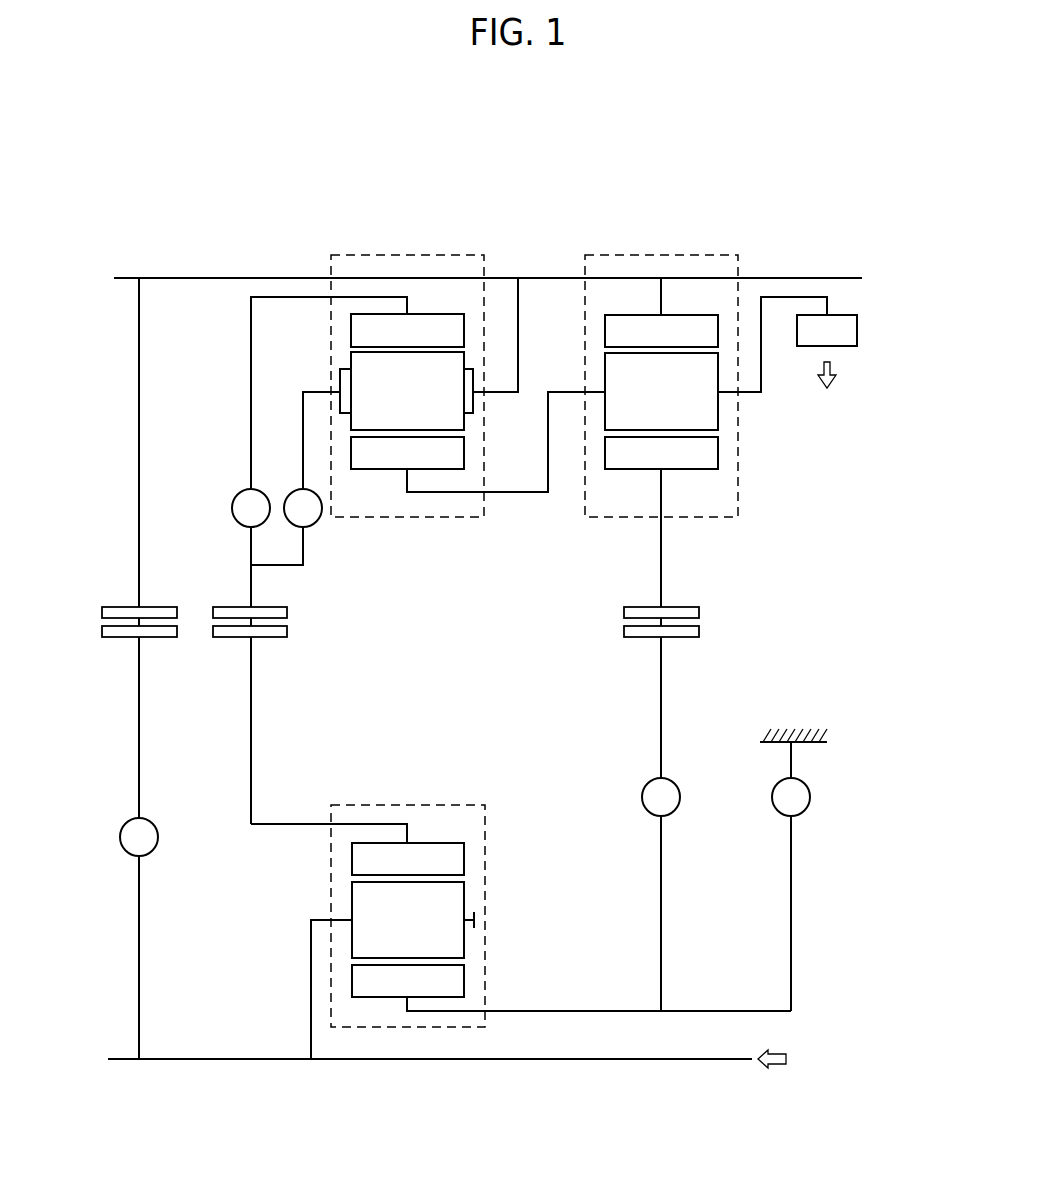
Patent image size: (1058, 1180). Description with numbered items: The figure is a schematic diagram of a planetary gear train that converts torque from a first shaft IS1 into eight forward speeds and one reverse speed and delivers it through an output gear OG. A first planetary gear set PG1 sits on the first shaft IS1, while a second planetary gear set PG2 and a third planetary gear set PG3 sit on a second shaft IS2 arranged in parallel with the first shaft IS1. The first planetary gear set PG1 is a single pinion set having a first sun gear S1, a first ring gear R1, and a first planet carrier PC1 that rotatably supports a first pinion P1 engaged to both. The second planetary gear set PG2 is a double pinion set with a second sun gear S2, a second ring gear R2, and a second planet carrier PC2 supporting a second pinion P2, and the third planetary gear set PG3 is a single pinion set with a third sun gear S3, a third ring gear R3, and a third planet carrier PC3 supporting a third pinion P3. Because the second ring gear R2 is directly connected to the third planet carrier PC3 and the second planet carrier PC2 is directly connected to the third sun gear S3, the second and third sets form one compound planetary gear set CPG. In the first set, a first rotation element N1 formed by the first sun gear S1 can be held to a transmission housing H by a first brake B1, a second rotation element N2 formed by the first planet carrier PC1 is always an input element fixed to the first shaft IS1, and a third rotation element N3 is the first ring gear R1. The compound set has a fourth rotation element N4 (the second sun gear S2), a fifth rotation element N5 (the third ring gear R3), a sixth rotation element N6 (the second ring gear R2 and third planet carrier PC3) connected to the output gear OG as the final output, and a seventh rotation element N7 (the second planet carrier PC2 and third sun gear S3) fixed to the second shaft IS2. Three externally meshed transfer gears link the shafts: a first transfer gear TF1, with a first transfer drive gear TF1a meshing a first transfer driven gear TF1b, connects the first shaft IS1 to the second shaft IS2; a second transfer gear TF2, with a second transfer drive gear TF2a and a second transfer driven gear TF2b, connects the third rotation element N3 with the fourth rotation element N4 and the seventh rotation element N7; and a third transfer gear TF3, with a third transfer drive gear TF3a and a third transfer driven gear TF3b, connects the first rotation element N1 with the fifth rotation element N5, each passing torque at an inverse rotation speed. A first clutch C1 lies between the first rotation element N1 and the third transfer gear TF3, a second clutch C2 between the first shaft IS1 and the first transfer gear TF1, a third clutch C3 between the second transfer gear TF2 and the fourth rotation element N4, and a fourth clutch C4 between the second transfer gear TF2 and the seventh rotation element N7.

The compound planetary gear set CPG is at (458, 141).
The first planetary gear set PG1 is at (388, 1040).
The second planetary gear set PG2 is at (442, 246).
The third planetary gear set PG3 is at (610, 246).
The first shaft IS1 is at (657, 1063).
The second shaft IS2 is at (190, 275).
The first rotation element N1 is at (571, 988).
The second rotation element N2 is at (270, 970).
The third rotation element N3 is at (357, 849).
The fourth rotation element N4 is at (407, 330).
The fifth rotation element N5 is at (661, 453).
The sixth rotation element N6 is at (549, 476).
The seventh rotation element N7 is at (519, 312).
The first sun gear S1 is at (571, 988).
The second sun gear S2 is at (407, 330).
The third sun gear S3 is at (661, 312).
The first ring gear R1 is at (357, 849).
The second ring gear R2 is at (407, 453).
The third ring gear R3 is at (661, 453).
The first planet carrier PC1 is at (325, 917).
The second planet carrier PC2 is at (320, 389).
The third planet carrier PC3 is at (745, 394).
The first pinion P1 is at (413, 920).
The second pinion P2 is at (406, 391).
The third pinion P3 is at (661, 391).
The output gear OG is at (787, 358).
The first clutch C1 is at (661, 740).
The second clutch C2 is at (139, 668).
The third clutch C3 is at (319, 560).
The fourth clutch C4 is at (295, 478).
The first brake B1 is at (791, 876).
The transmission housing H is at (812, 728).
The first transfer gear TF1 is at (172, 684).
The first transfer drive gear TF1a is at (177, 612).
The first transfer driven gear TF1b is at (177, 632).
The second transfer gear TF2 is at (282, 684).
The second transfer drive gear TF2a is at (287, 612).
The second transfer driven gear TF2b is at (287, 632).
The third transfer gear TF3 is at (694, 683).
The third transfer drive gear TF3a is at (699, 612).
The third transfer driven gear TF3b is at (699, 632).